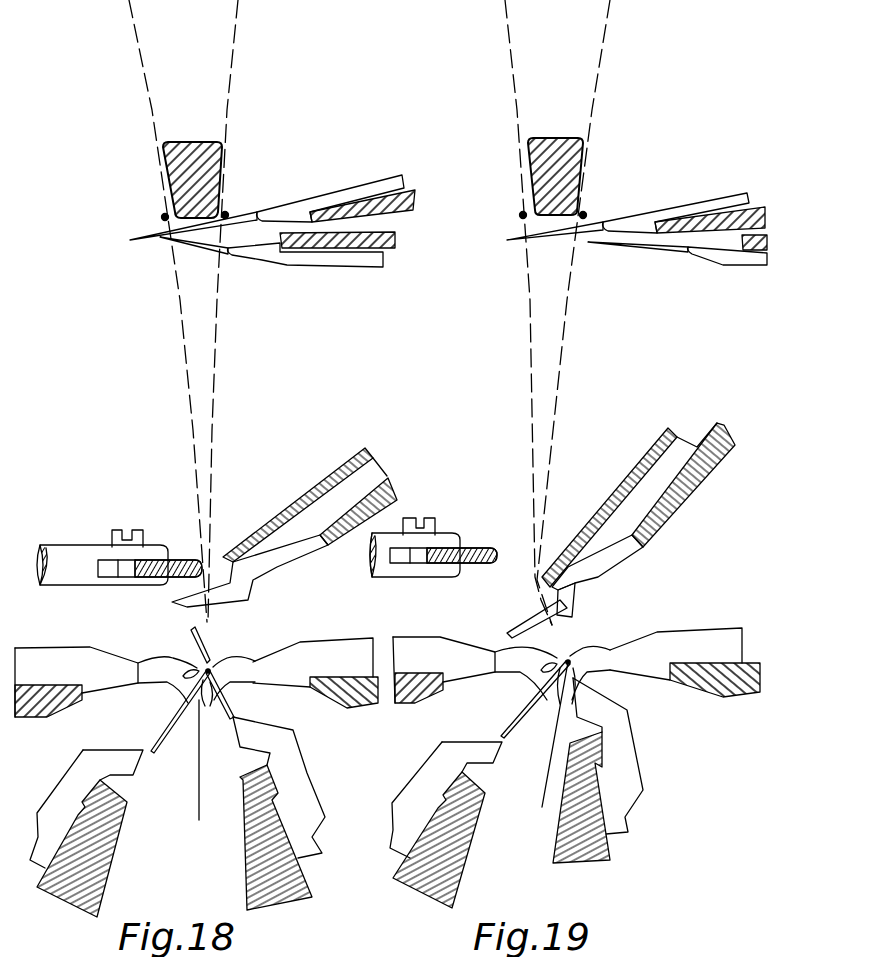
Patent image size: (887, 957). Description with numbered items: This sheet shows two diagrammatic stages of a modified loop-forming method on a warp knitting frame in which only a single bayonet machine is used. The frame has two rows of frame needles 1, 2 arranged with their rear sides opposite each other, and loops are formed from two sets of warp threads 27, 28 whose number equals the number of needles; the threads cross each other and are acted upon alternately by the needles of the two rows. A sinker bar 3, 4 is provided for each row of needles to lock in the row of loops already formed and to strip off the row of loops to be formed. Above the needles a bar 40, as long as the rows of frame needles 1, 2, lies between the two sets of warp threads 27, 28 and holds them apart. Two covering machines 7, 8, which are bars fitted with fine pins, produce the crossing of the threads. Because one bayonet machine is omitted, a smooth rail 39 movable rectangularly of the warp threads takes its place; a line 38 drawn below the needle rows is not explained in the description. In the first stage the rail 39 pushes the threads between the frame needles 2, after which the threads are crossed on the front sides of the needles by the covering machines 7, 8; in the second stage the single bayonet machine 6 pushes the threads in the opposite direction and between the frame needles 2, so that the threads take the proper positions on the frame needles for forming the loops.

In FIG. 18, the frame needles 1 is at (157, 737).
In FIG. 19, the frame needles 1 is at (513, 722).
In FIG. 18, the frame needles 2 is at (230, 710).
In FIG. 19, the frame needles 2 is at (560, 634).
In FIG. 18, the sinker bar 3 is at (152, 673).
In FIG. 19, the sinker bar 3 is at (503, 660).
In FIG. 18, the sinker bar 4 is at (238, 667).
In FIG. 19, the sinker bar 4 is at (587, 655).
In FIG. 18, the bayonet machine 6 is at (248, 583).
In FIG. 19, the bayonet machine 6 is at (578, 587).
In FIG. 18, the covering machine 7 is at (268, 253).
In FIG. 19, the covering machine 7 is at (670, 252).
In FIG. 18, the covering machine 8 is at (277, 210).
In FIG. 19, the covering machine 8 is at (627, 215).
In FIG. 18, the warp threads 27 is at (182, 327).
In FIG. 19, the warp threads 27 is at (530, 338).
In FIG. 18, the warp threads 28 is at (217, 345).
In FIG. 19, the warp threads 28 is at (565, 344).
In FIG. 18, the vertical reference line 38 is at (199, 813).
In FIG. 19, the vertical reference line 38 is at (542, 804).
In FIG. 18, the smooth rail 39 is at (178, 560).
In FIG. 19, the smooth rail 39 is at (482, 545).
In FIG. 18, the bar 40 is at (189, 150).
In FIG. 19, the bar 40 is at (552, 140).